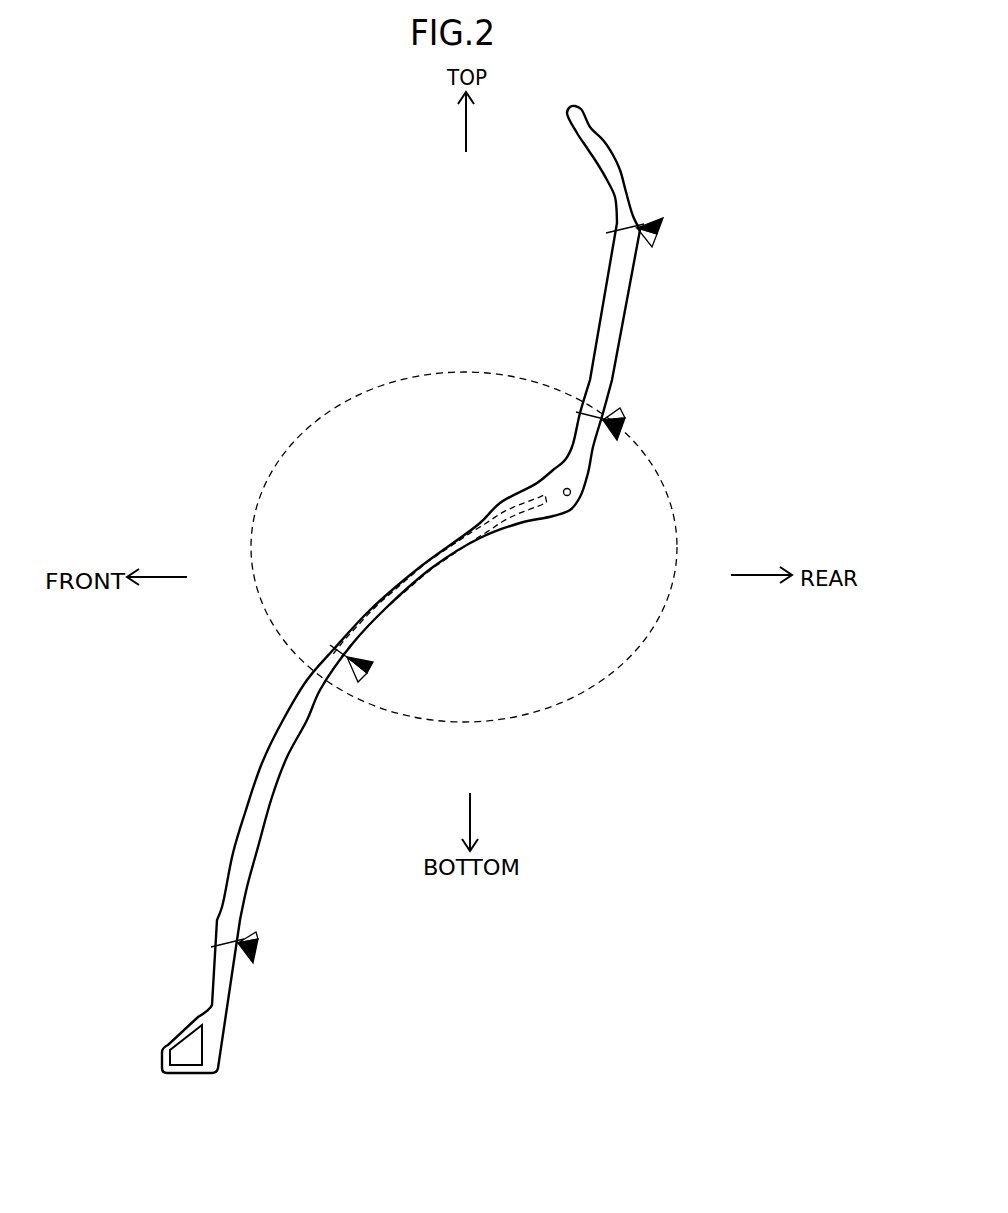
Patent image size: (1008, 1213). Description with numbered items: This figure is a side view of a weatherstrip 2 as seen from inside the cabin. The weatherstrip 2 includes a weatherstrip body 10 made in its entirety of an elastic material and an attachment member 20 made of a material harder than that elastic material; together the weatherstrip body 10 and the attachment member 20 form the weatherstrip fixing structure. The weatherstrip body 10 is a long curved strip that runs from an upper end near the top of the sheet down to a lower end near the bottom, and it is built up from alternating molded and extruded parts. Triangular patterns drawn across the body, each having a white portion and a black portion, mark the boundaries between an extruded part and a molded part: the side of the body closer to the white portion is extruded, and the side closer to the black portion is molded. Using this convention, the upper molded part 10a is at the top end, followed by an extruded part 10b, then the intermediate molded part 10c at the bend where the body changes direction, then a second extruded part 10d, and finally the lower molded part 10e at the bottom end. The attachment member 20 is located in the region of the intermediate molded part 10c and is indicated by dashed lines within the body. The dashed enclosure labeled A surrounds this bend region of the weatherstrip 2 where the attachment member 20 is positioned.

The weatherstrip 2 is at (674, 177).
The weatherstrip body 10 is at (596, 288).
The upper molded part 10a is at (592, 143).
The extruded part 10b is at (607, 340).
The intermediate molded part 10c is at (573, 463).
The extruded part 10d is at (247, 827).
The lower molded part 10e is at (218, 979).
The attachment member 20 is at (468, 548).
The region A (enlarged view) A is at (676, 505).